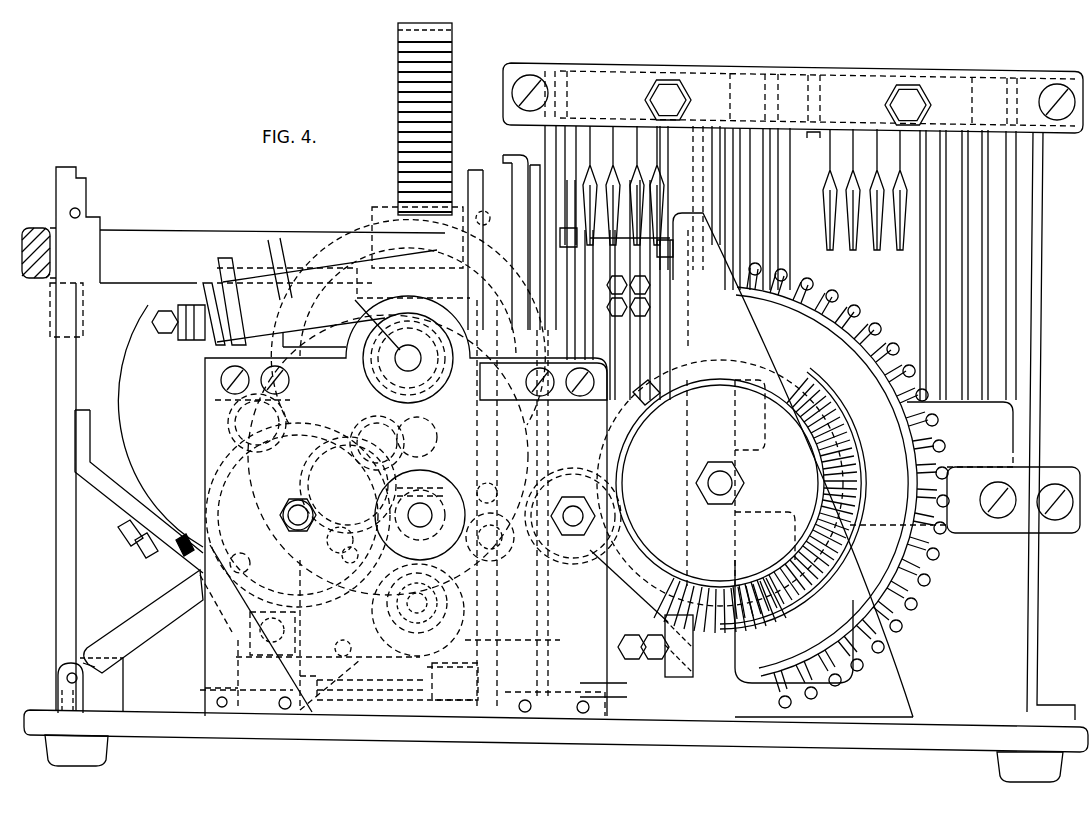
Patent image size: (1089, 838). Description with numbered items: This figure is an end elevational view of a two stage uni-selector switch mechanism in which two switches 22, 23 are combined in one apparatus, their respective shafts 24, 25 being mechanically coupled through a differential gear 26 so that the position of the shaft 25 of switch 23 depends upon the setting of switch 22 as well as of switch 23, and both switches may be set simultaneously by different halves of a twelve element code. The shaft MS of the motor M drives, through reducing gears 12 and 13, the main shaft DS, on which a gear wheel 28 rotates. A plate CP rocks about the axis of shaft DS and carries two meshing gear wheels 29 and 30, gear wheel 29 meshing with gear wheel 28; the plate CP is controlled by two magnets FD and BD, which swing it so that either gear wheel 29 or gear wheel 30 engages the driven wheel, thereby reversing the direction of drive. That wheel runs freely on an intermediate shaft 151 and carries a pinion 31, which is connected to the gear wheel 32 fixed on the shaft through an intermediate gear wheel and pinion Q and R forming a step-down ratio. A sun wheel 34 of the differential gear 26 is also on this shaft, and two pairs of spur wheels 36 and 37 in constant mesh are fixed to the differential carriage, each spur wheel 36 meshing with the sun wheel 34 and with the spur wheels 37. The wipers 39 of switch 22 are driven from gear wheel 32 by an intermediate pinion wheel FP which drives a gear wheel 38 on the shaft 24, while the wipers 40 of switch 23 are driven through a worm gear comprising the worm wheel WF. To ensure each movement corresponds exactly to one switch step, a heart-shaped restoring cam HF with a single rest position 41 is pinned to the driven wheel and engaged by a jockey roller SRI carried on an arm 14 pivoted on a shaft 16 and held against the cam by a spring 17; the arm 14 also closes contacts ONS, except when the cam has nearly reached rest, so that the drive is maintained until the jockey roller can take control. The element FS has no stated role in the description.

The worm wheel WF is at (400, 22).
The feed shaft FS is at (164, 252).
The shaft of switch 23 25 is at (201, 243).
The forward drive magnet FD is at (270, 282).
The reducing gear 13 is at (338, 236).
The plate (reversible clutch) CP is at (383, 225).
The backward drive magnet BD is at (437, 256).
The main shaft DS is at (327, 300).
The gear wheel 28 is at (470, 344).
The gear wheel 29 is at (395, 358).
The gear wheel 30 is at (482, 375).
The gear wheel 32 is at (388, 455).
The motor M is at (140, 380).
The motor shaft MS is at (232, 416).
The differential gear 26 is at (348, 480).
The reducing gear 12 is at (298, 515).
The intermediate gear wheel Q is at (200, 498).
The intermediate pinion R is at (294, 494).
The spur wheels 37 is at (318, 498).
The spur wheels 36 is at (503, 480).
The intermediate shaft 151 is at (421, 516).
The pinion 31 is at (348, 560).
The sun wheel 34 is at (500, 550).
The intermediate pinion wheel FP is at (573, 534).
The jockey roller SRI is at (553, 637).
The rest position 41 is at (440, 626).
The restoring cam HF is at (300, 634).
The shaft 16 is at (235, 678).
The spring 17 is at (142, 628).
The contacts ONS is at (378, 712).
The arm 14 is at (400, 712).
The gear wheel 38 is at (658, 563).
The wipers of switch 22 39 is at (660, 392).
The shaft of switch 22 24 is at (720, 492).
The uni-selector switch 22 is at (905, 592).
The uni-selector switch 23 is at (1018, 190).
The wipers of switch 23 40 is at (657, 165).